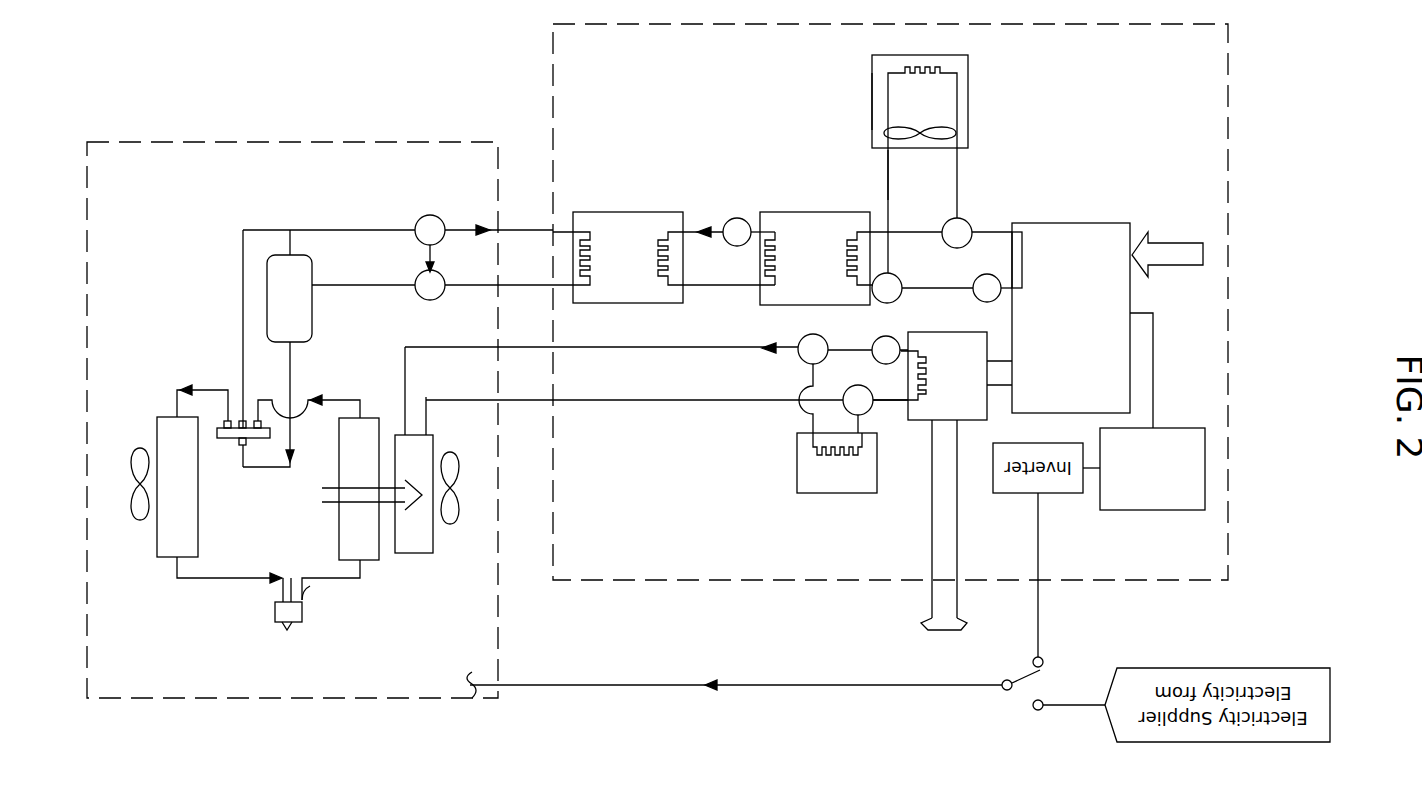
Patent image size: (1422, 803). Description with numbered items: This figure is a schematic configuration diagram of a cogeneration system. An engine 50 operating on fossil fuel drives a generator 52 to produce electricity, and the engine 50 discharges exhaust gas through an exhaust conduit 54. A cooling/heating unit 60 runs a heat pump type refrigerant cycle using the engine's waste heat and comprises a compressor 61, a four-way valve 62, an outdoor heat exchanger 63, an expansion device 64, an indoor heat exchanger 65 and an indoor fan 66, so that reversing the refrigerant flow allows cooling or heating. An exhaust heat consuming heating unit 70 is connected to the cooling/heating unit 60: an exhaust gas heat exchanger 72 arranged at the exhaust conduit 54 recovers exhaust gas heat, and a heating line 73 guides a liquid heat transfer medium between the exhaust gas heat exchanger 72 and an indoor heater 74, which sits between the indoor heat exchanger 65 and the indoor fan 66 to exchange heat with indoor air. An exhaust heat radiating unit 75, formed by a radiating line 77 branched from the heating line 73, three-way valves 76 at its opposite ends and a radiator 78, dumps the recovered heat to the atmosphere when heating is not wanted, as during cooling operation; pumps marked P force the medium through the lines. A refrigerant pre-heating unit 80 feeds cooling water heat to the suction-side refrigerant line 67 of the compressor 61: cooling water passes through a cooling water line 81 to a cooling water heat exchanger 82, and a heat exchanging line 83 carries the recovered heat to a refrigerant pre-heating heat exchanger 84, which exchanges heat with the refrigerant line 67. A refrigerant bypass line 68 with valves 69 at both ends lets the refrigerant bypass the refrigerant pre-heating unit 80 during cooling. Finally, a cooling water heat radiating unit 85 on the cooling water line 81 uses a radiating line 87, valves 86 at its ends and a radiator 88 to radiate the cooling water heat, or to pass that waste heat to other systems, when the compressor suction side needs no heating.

The engine 50 is at (1088, 235).
The generator 52 is at (1132, 498).
The exhaust conduit 54 is at (940, 530).
The cooling/heating unit 60 is at (296, 702).
The compressor 61 is at (266, 275).
The four-way valve 62 is at (224, 420).
The outdoor heat exchanger 63 is at (160, 518).
The expansion device 64 is at (275, 614).
The indoor heat exchanger 65 is at (365, 552).
The indoor fan 66 is at (450, 526).
The refrigerant line 67 is at (480, 230).
The refrigerant bypass line 68 is at (428, 252).
The valves 69 is at (423, 218).
The exhaust heat consuming heating unit 70 is at (705, 460).
The exhaust gas heat exchanger 72 is at (921, 420).
The heating line 73 is at (669, 400).
The indoor heater 74 is at (415, 544).
The exhaust heat radiating unit 75 is at (816, 474).
The valves 76 is at (803, 360).
The radiating line 77 is at (802, 424).
The radiator 78 is at (807, 488).
The refrigerant pre-heating unit 80 is at (670, 185).
The cooling water line 81 is at (995, 232).
The cooling water heat exchanger 82 is at (795, 225).
The heat exchanging line 83 is at (714, 229).
The refrigerant pre-heating heat exchanger 84 is at (623, 222).
The cooling water heat radiating unit 85 is at (925, 164).
The valves 86 is at (945, 220).
The radiating line 87 is at (888, 180).
The radiator 88 is at (872, 90).